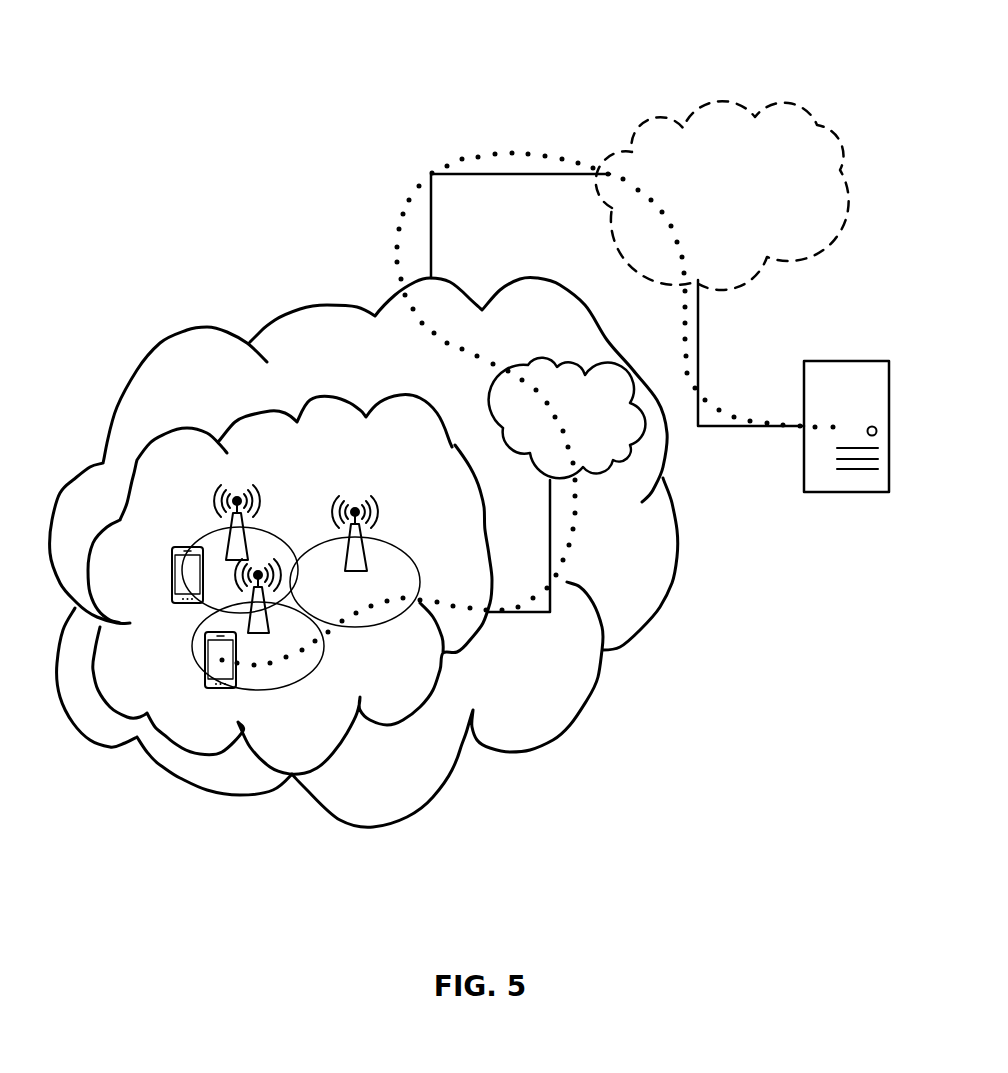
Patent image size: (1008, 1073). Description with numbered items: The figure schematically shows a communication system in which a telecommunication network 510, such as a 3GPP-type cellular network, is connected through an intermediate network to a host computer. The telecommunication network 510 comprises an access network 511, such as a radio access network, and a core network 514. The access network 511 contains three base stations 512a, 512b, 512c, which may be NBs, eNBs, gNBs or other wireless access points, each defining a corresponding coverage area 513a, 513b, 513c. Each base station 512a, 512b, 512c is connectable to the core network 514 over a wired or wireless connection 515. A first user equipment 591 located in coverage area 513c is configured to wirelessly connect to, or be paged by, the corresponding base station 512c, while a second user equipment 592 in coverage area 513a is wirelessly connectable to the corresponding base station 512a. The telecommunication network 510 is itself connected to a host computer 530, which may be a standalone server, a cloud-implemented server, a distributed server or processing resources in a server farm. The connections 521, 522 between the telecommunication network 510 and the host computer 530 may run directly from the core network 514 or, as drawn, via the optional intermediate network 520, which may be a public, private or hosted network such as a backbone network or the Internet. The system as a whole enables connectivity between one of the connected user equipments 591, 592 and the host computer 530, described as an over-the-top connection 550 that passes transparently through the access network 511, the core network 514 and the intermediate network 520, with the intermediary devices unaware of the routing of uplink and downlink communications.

The telecommunication network 510 is at (380, 344).
The access network 511 is at (301, 456).
The base station 512a is at (267, 628).
The base station 512b is at (378, 515).
The base station 512c is at (213, 503).
The coverage area 513a is at (323, 647).
The coverage area 513b is at (420, 583).
The coverage area 513c is at (192, 547).
The core network 514 is at (596, 430).
The wired or wireless connection 515 is at (552, 525).
The intermediate network 520 is at (708, 198).
The connection 521 is at (515, 175).
The connection 522 is at (757, 427).
The host computer 530 is at (846, 442).
The over-the-top (OTT) connection 550 is at (408, 202).
The first user equipment (UE) 591 is at (177, 600).
The second UE 592 is at (207, 680).